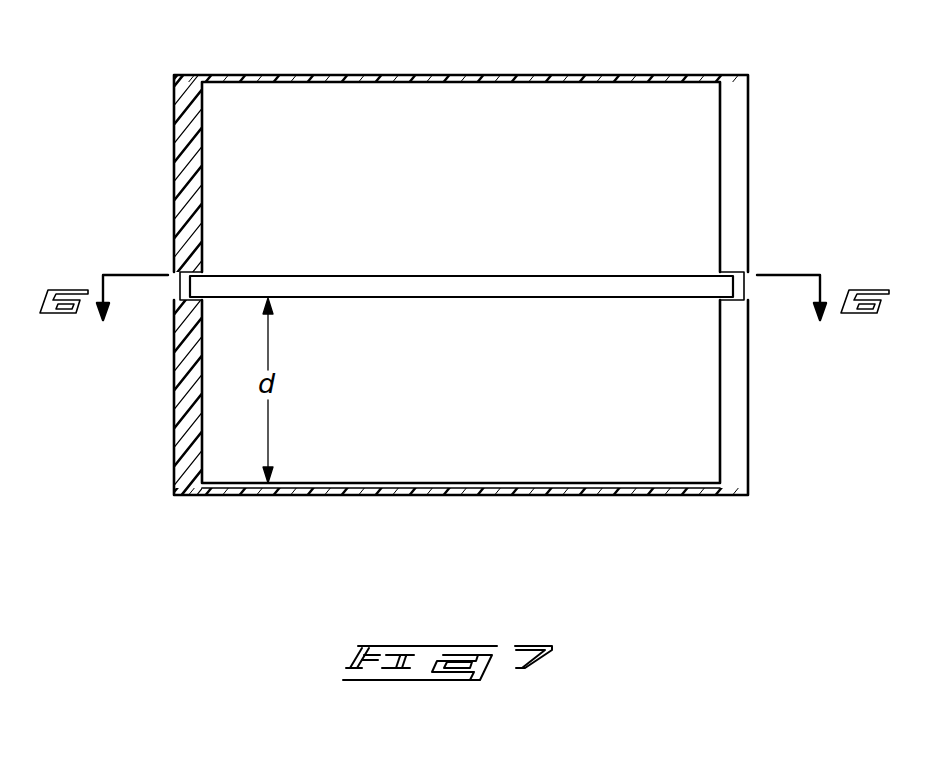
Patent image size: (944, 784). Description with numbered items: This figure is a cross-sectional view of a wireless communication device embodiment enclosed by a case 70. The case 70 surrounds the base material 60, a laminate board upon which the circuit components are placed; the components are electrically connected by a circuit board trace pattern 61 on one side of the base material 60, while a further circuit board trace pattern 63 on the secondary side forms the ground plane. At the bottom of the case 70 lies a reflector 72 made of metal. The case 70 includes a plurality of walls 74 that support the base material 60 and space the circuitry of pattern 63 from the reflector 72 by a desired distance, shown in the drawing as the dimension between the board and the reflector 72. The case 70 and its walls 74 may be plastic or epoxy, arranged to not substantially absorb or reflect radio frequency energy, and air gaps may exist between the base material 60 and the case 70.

The case 70 is at (168, 108).
The walls 74 is at (178, 225).
The reflector 72 is at (585, 497).
The base material 60 is at (618, 285).
The circuit board trace pattern 61 is at (453, 275).
The circuit board trace pattern 63 is at (380, 298).